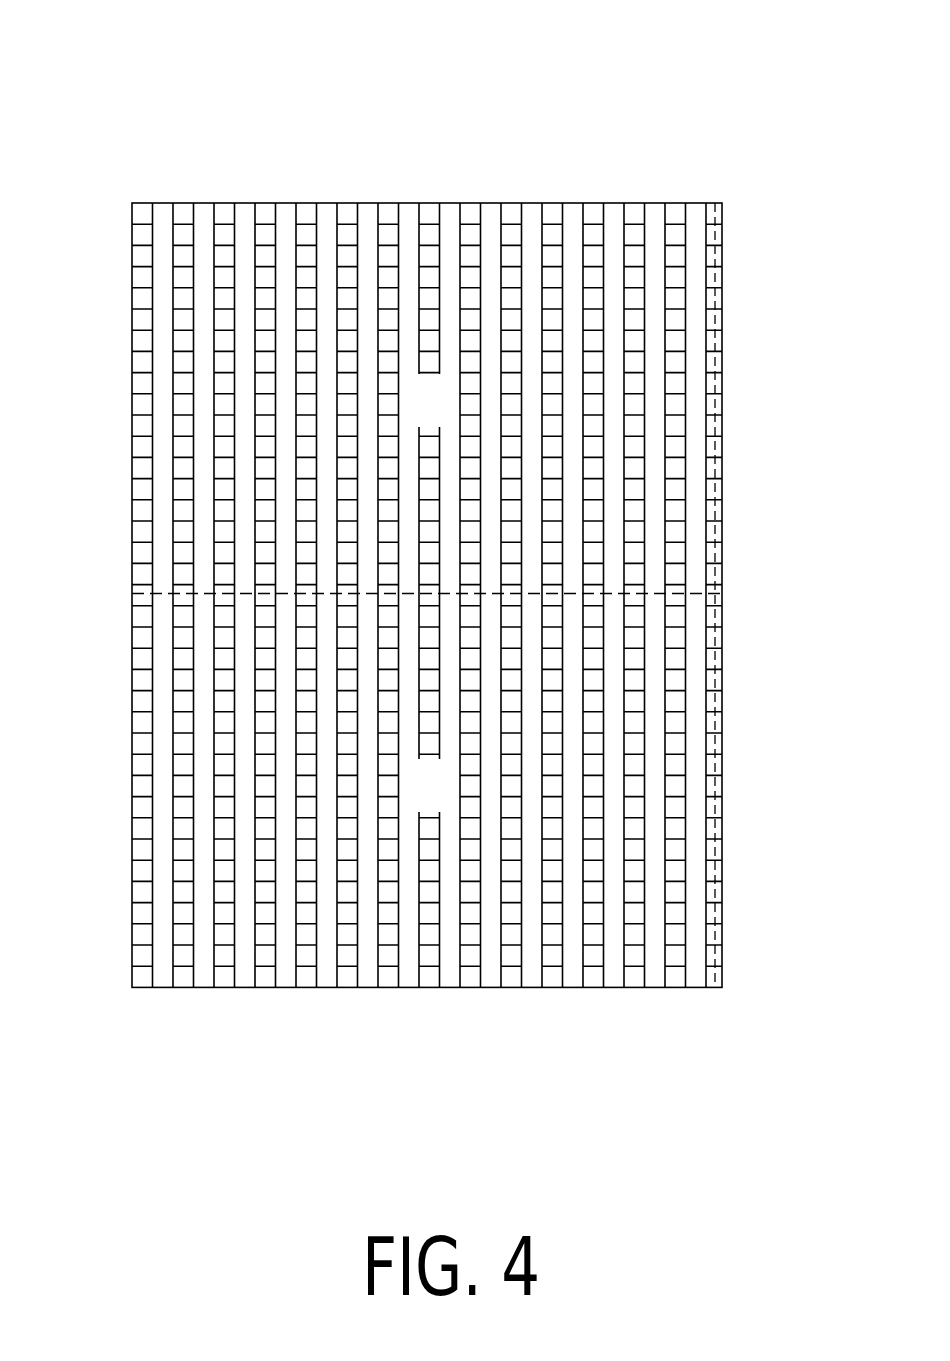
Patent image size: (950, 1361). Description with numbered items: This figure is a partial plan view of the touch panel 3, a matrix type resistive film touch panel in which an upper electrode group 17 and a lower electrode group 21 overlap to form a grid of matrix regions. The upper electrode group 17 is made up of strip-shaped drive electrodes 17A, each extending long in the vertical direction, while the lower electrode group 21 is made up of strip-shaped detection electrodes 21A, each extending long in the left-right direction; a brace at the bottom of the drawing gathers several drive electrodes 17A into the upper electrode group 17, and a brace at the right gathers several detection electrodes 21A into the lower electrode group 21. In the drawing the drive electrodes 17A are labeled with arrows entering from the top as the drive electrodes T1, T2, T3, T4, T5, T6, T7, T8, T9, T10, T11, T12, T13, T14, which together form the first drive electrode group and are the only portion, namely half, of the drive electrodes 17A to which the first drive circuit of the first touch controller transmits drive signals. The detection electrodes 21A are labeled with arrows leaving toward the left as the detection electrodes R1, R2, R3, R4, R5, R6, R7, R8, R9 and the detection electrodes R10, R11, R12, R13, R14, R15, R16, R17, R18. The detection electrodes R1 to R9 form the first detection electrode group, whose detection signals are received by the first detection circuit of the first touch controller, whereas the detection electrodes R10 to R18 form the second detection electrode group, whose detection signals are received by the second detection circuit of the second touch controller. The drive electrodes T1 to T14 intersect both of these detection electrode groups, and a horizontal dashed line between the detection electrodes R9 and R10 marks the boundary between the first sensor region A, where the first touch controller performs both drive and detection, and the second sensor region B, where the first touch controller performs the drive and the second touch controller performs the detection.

The touch panel 3 is at (86, 108).
The upper electrode group 17 is at (388, 1080).
The drive electrode 17A is at (244, 980).
The lower electrode group 21 is at (828, 397).
The detection electrode 21A is at (722, 315).
The drive electrode T1 is at (168, 190).
The drive electrode T2 is at (209, 190).
The drive electrode T3 is at (250, 190).
The drive electrode T4 is at (291, 190).
The drive electrode T5 is at (332, 190).
The drive electrode T6 is at (373, 190).
The drive electrode T7 is at (414, 190).
The drive electrode T8 is at (455, 190).
The drive electrode T9 is at (496, 190).
The drive electrode T10 is at (537, 190).
The drive electrode T11 is at (578, 190).
The drive electrode T12 is at (619, 190).
The drive electrode T13 is at (660, 190).
The drive electrode T14 is at (701, 190).
The detection electrode R1 is at (130, 235).
The detection electrode R2 is at (130, 277).
The detection electrode R3 is at (130, 320).
The detection electrode R4 is at (130, 362).
The detection electrode R5 is at (130, 404).
The detection electrode R6 is at (130, 447).
The detection electrode R7 is at (130, 489).
The detection electrode R8 is at (130, 532).
The detection electrode R9 is at (130, 574).
The detection electrode R10 is at (130, 616).
The detection electrode R11 is at (130, 659).
The detection electrode R12 is at (130, 701).
The detection electrode R13 is at (130, 744).
The detection electrode R14 is at (130, 786).
The detection electrode R15 is at (130, 828).
The detection electrode R16 is at (130, 871).
The detection electrode R17 is at (130, 913).
The detection electrode R18 is at (130, 956).